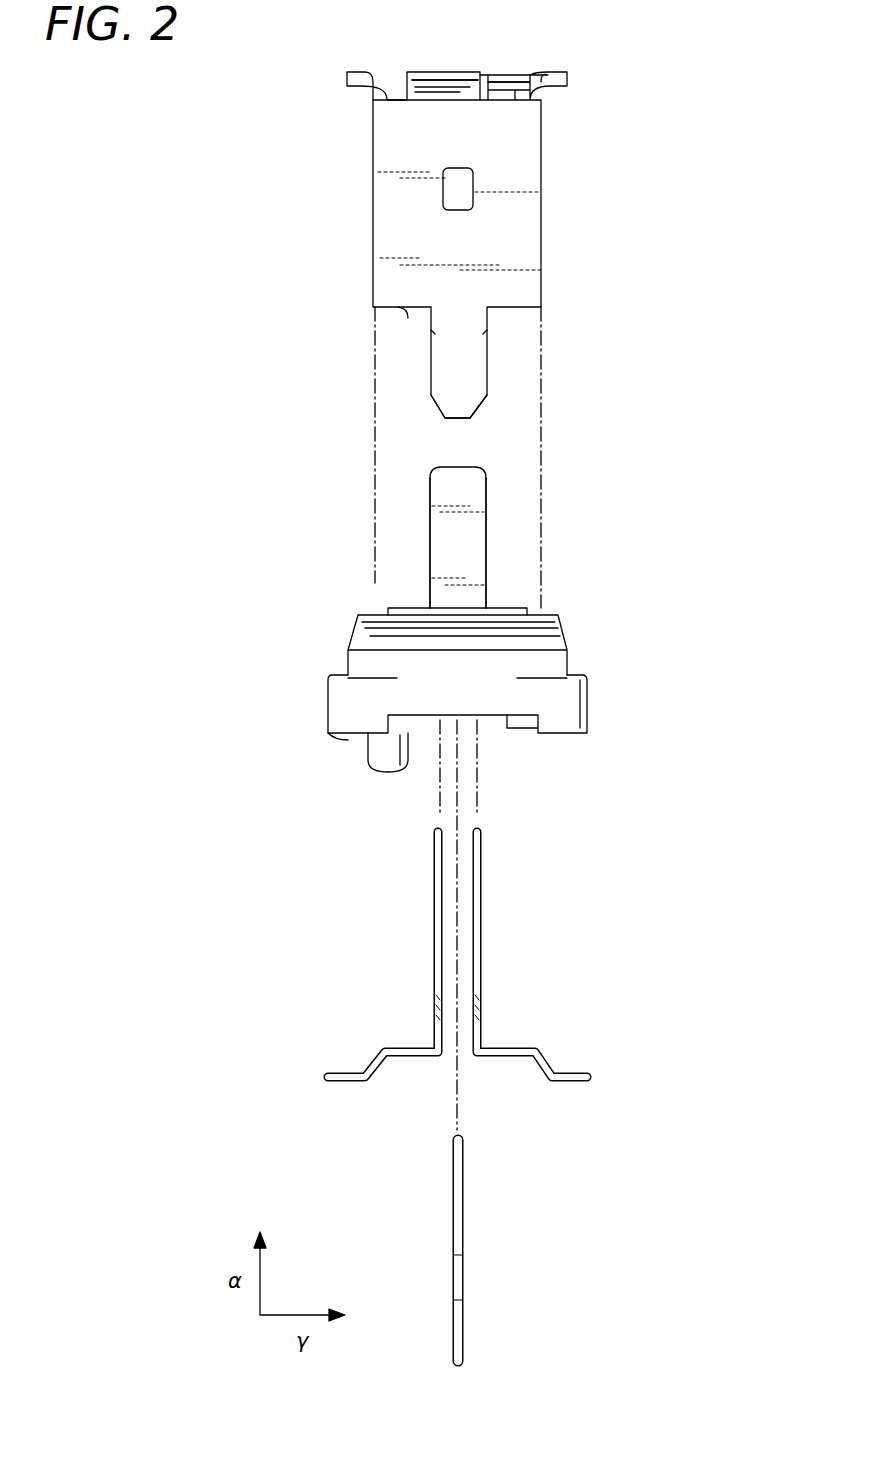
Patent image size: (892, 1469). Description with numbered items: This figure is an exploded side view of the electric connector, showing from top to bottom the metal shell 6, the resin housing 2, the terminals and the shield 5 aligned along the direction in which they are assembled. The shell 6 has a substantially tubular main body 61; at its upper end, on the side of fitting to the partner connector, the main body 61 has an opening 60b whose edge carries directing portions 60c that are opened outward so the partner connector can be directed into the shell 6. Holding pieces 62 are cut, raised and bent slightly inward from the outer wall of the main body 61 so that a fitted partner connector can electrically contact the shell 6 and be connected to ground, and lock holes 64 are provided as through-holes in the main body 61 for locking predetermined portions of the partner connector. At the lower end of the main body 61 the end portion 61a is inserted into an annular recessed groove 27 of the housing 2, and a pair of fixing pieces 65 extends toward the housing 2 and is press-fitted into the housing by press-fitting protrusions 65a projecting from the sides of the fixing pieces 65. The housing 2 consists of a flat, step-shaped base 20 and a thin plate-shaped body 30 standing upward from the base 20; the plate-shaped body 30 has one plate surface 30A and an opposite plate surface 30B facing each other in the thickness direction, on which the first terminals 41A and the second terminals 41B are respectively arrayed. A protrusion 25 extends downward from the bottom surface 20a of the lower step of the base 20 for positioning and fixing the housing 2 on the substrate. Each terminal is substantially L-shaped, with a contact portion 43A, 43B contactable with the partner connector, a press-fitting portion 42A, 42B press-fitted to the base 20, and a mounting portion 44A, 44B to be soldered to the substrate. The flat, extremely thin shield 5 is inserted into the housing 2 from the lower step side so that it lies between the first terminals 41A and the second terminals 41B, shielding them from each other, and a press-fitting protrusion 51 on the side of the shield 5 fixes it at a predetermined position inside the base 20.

The housing 2 is at (480, 631).
The shield 5 is at (507, 1250).
The shell 6 is at (489, 226).
The base 20 is at (461, 688).
The bottom surface 20a is at (345, 742).
The protrusion 25 is at (378, 748).
The annular recessed groove 27 is at (378, 600).
The plate-shaped body 30 is at (490, 537).
The one plate surface 30A is at (488, 540).
The other plate surface 30B is at (428, 540).
The first terminals 41A is at (567, 954).
The second terminals 41B is at (349, 954).
The press-fitting portion 42A is at (482, 1022).
The press-fitting portion 42B is at (433, 1022).
The contact portion 43A is at (482, 917).
The contact portion 43B is at (432, 915).
The mounting portion 44A is at (575, 1073).
The mounting portion 44B is at (345, 1073).
The press-fitting protrusion 51 is at (464, 1280).
The opening 60b is at (486, 90).
The directing portions 60c is at (440, 82).
The main body 61 is at (512, 223).
The end portion 61a is at (405, 326).
The holding pieces 62 is at (545, 117).
The lock holes 64 is at (450, 200).
The fixing pieces 65 is at (455, 395).
The press-fitting protrusions 65a is at (488, 335).